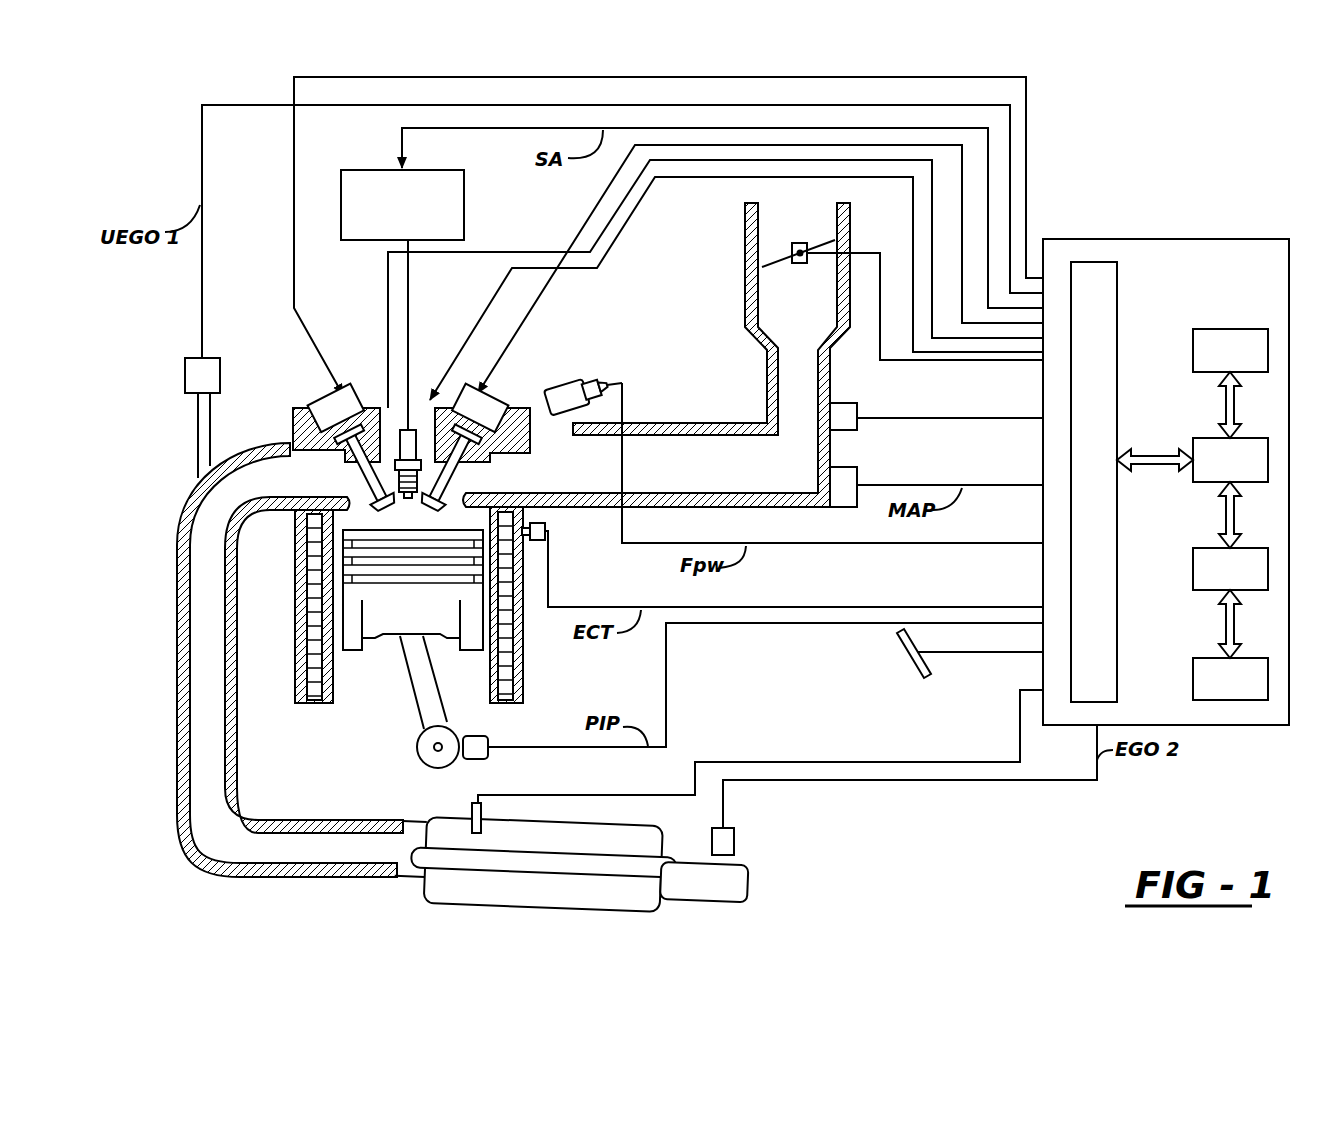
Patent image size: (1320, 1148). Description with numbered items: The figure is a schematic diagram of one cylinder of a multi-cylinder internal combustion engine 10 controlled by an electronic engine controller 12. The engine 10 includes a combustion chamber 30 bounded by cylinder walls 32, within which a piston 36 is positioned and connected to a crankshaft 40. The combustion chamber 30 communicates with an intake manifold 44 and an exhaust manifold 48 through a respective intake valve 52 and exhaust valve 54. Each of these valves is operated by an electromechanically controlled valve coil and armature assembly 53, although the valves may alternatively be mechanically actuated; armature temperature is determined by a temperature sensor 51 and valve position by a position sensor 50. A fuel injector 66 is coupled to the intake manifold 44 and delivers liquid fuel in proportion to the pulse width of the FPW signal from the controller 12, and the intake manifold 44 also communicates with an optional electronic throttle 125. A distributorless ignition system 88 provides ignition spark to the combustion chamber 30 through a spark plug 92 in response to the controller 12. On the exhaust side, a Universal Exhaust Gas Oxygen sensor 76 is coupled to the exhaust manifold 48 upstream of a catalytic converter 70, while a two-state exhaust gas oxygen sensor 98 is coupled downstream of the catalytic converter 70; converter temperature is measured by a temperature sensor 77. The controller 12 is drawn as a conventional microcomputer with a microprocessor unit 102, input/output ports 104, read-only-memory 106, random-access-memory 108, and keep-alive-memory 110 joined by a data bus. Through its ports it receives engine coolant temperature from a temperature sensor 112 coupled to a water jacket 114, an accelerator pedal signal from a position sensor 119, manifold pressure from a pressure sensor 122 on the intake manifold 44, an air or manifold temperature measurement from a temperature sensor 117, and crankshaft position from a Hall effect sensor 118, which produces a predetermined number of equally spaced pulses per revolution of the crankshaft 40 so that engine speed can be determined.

The internal combustion engine 10 is at (288, 404).
The electronic engine controller 12 is at (1156, 238).
The combustion chamber 30 is at (360, 553).
The cylinder walls 32 is at (334, 690).
The piston 36 is at (402, 622).
The crankshaft 40 is at (417, 746).
The intake manifold 44 is at (752, 474).
The exhaust manifold 48 is at (205, 536).
The position sensor 50 is at (371, 392).
The temperature sensor 51 is at (461, 388).
The intake valve 52 is at (478, 484).
The valve coil and armature assembly 53 is at (338, 393).
The exhaust valve 54 is at (357, 484).
The fuel injector 66 is at (560, 388).
The catalytic converter 70 is at (502, 908).
The Universal Exhaust Gas Oxygen sensor 76 is at (190, 360).
The temperature sensor 77 is at (470, 822).
The distributorless ignition system 88 is at (466, 212).
The spark plug 92 is at (412, 395).
The two-state exhaust gas oxygen sensor 98 is at (742, 832).
The microprocessor unit 102 is at (1204, 438).
The input/output ports 104 is at (1117, 290).
The read-only-memory 106 is at (1233, 329).
The random-access-memory 108 is at (1204, 548).
The keep-alive-memory 110 is at (1204, 658).
The temperature sensor 112 is at (549, 530).
The water jacket 114 is at (310, 704).
The temperature sensor 117 is at (858, 408).
The Hall effect sensor 118 is at (480, 758).
The position sensor 119 is at (900, 670).
The pressure sensor 122 is at (858, 480).
The electronic throttle 125 is at (788, 240).